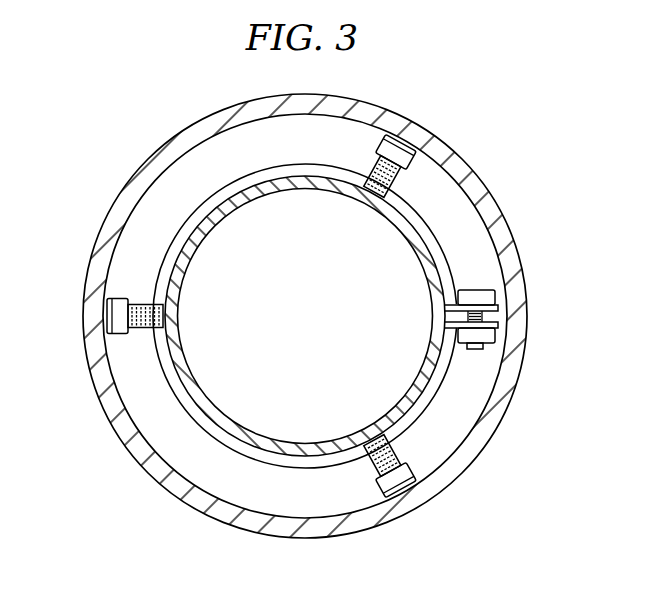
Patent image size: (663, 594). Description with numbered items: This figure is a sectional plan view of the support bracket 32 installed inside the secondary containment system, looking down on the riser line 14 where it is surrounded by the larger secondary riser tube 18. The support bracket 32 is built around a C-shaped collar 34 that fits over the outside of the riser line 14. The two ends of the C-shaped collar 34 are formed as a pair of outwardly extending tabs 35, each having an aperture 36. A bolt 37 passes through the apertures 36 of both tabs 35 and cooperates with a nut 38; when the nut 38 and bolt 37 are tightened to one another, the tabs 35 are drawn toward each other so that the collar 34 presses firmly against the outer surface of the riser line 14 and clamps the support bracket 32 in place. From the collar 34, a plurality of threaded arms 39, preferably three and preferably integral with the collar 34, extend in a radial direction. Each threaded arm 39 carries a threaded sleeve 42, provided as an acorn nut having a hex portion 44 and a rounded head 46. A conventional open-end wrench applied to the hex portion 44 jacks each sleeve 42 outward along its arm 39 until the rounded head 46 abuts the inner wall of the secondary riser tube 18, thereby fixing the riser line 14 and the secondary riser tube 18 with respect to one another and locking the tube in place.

The riser line 14 is at (160, 262).
The secondary riser tube 18 is at (440, 156).
The support bracket 32 is at (176, 473).
The C-shaped collar 34 is at (417, 409).
The outwardly extending tabs 35 is at (498, 306).
The aperture 36 is at (492, 291).
The bolt 37 is at (470, 290).
The nut 38 is at (481, 349).
The threaded arms 39 is at (378, 168).
The threaded sleeves 42 is at (430, 179).
The hex portion 44 is at (407, 157).
The rounded head 46 is at (398, 143).